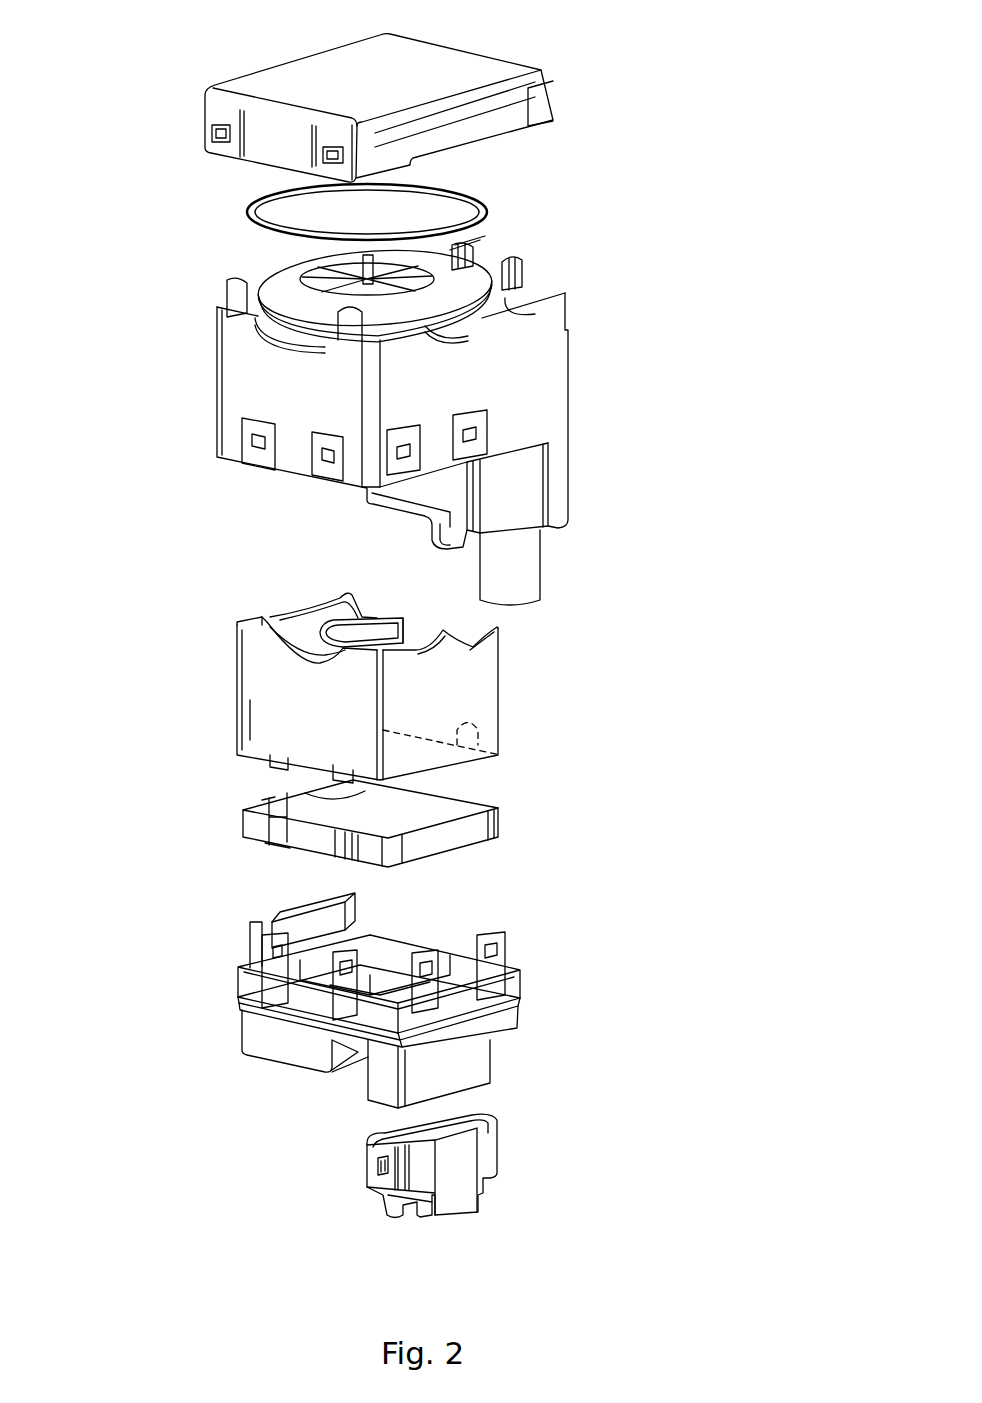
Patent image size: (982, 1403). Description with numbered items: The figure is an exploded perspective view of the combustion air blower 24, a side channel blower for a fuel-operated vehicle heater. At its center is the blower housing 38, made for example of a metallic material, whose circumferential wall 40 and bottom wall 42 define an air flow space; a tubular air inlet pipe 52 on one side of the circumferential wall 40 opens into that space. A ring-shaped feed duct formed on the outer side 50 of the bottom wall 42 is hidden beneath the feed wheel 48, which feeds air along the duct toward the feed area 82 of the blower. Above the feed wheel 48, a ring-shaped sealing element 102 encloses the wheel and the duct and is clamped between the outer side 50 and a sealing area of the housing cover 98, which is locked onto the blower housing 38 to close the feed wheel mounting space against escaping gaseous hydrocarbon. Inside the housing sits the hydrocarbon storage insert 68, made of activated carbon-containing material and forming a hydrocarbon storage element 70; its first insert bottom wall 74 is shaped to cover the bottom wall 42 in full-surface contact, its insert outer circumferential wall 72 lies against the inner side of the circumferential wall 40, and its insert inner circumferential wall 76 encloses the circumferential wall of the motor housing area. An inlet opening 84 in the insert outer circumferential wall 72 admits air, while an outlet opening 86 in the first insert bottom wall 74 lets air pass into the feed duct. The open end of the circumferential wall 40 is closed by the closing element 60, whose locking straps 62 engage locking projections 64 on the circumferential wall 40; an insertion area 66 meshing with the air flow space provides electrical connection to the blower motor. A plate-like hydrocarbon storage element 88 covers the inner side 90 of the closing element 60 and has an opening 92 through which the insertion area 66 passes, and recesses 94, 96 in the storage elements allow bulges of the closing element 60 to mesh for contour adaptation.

The combustion air blower 24 is at (702, 104).
The housing cover 98 is at (450, 40).
The sealing element 102 is at (245, 212).
The feed area 82 is at (520, 215).
The feed wheel 48 is at (256, 277).
The bottom wall 42 is at (527, 296).
The outer side 50 is at (566, 305).
The blower housing 38 is at (565, 387).
The circumferential wall 40 is at (250, 385).
The locking projections 64 is at (248, 432).
The air inlet pipe 52 is at (540, 565).
The hydrocarbon storage insert 68 is at (500, 658).
The first insert bottom wall 74 is at (262, 619).
The outlet opening 86 is at (330, 613).
The insert inner circumferential wall 76 is at (373, 637).
The hydrocarbon storage element 70 is at (236, 672).
The insert outer circumferential wall 72 is at (270, 700).
The inlet opening 84 is at (478, 725).
The recess 96 is at (268, 770).
The plate-like hydrocarbon storage element 88 is at (500, 820).
The opening 92 is at (270, 800).
The recess 94 is at (270, 855).
The closing element 60 is at (240, 1032).
The locking straps 62 is at (510, 945).
The insertion area 66 is at (265, 920).
The inner side 90 is at (378, 987).